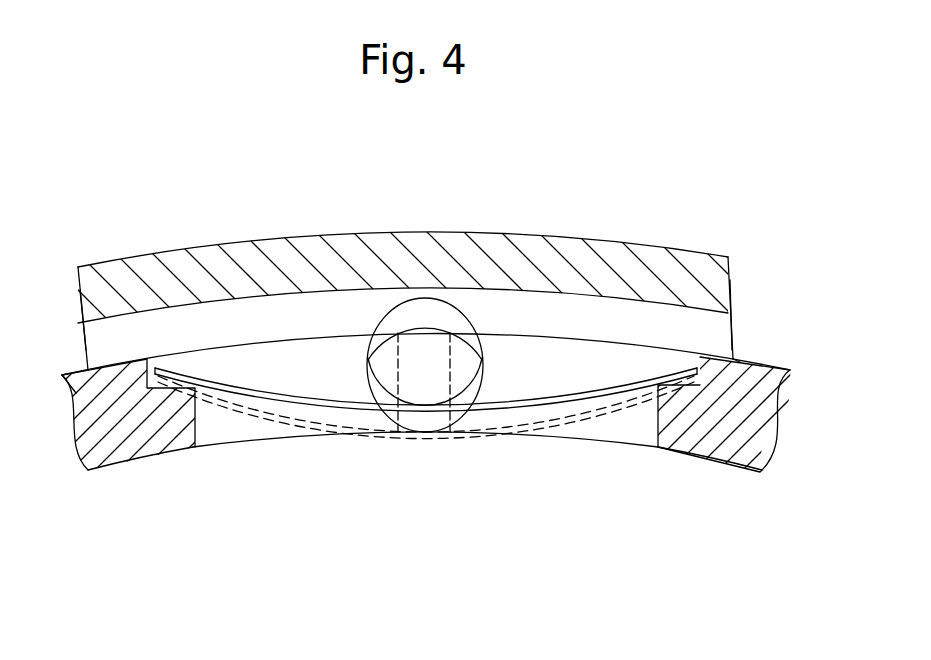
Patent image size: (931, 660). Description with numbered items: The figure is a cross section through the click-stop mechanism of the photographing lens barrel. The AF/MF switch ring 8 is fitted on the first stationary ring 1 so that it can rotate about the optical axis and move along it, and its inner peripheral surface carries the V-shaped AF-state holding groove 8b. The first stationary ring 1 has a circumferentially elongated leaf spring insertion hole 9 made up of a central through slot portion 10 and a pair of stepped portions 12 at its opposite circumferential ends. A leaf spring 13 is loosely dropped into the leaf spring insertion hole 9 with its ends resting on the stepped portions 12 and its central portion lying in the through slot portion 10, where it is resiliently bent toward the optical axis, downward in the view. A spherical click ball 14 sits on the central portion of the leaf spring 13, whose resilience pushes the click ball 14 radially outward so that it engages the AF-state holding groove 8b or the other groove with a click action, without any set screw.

The first stationary ring 1 is at (708, 425).
The AF/MF switch ring 8 is at (458, 246).
The AF-state holding groove 8b is at (605, 312).
The leaf spring insertion hole 9 is at (251, 356).
The through slot portion 10 is at (197, 422).
The stepped portions 12 is at (76, 395).
The leaf spring 13 is at (535, 407).
The click ball 14 is at (470, 306).